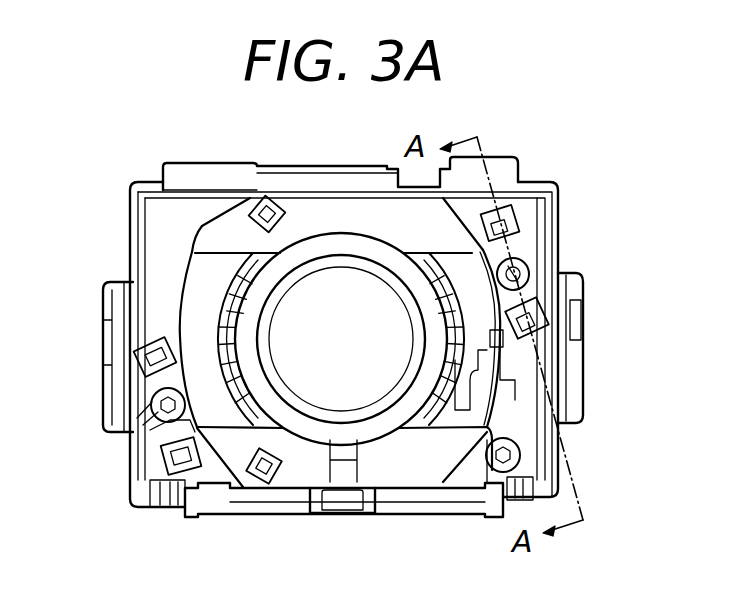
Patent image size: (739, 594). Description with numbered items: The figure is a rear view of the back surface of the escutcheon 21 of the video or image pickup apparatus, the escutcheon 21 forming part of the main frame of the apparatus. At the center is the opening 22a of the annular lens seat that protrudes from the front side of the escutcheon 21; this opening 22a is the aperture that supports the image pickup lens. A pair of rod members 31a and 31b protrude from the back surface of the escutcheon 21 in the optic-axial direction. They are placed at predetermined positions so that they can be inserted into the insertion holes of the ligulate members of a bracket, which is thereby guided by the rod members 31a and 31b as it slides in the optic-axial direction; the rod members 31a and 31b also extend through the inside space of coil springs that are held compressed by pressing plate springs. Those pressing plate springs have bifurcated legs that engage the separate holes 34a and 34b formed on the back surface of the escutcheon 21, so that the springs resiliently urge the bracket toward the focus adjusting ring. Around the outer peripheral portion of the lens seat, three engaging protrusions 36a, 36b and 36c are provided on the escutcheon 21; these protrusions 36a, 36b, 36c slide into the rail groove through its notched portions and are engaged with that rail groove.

The escutcheon 21 is at (135, 183).
The opening 22a is at (420, 312).
The rod member 31a is at (152, 403).
The rod member 31b is at (522, 273).
The hole 34a is at (490, 223).
The hole 34b is at (147, 344).
The engaging protrusion 36a is at (270, 200).
The engaging protrusion 36b is at (490, 338).
The engaging protrusion 36c is at (264, 479).